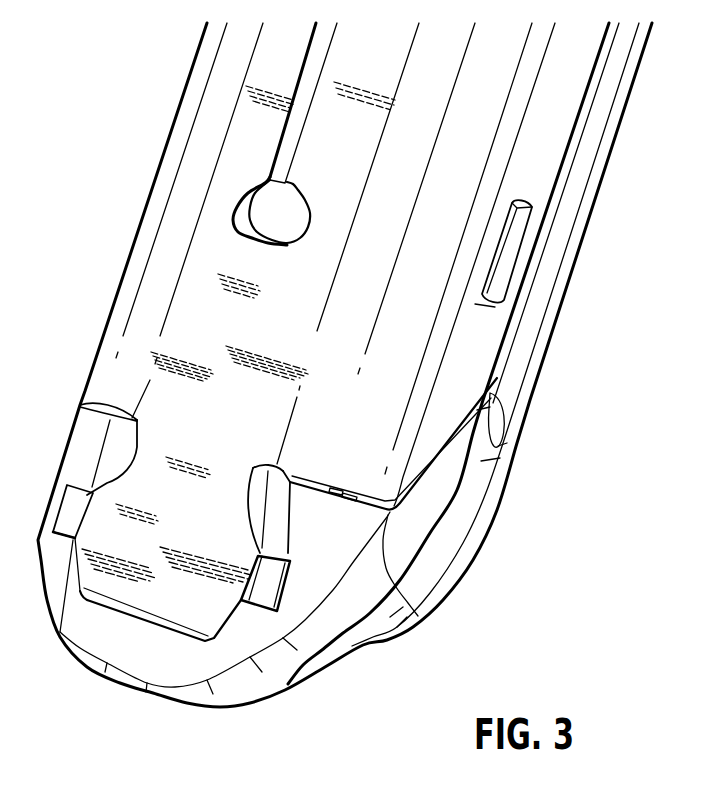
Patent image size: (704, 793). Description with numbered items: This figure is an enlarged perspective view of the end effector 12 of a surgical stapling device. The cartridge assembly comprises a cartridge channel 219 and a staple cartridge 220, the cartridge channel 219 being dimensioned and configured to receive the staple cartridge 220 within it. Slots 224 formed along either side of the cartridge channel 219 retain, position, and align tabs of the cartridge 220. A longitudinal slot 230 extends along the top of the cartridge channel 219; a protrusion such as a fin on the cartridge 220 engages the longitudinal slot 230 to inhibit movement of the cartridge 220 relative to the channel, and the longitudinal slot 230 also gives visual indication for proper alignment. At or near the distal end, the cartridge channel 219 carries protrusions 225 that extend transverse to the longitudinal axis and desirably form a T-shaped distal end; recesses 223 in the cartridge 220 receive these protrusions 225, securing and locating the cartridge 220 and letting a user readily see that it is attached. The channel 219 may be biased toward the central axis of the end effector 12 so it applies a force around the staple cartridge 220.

The end effector 12 is at (99, 93).
The cartridge channel 219 is at (213, 93).
The longitudinal slot 230 is at (270, 153).
The slots 224 is at (509, 247).
The recesses 223 is at (335, 580).
The protrusions 225 is at (263, 588).
The staple cartridge 220 is at (137, 645).